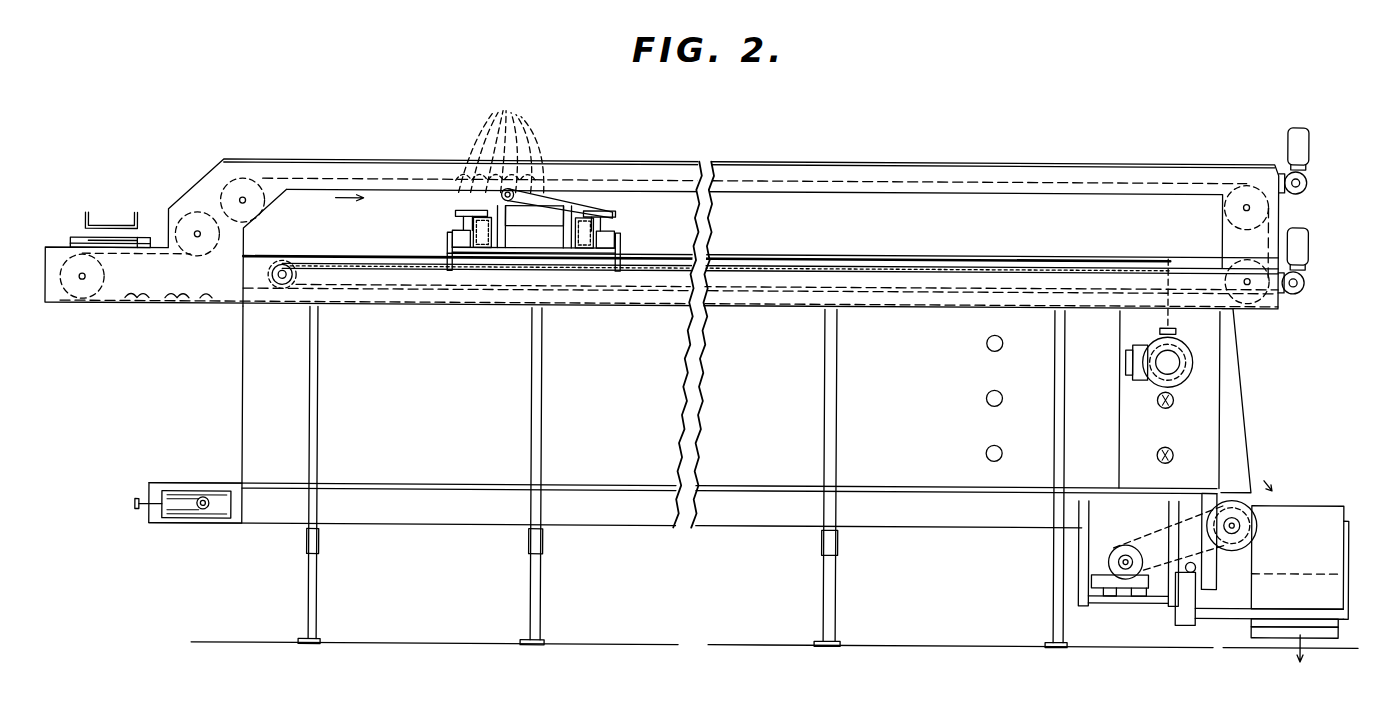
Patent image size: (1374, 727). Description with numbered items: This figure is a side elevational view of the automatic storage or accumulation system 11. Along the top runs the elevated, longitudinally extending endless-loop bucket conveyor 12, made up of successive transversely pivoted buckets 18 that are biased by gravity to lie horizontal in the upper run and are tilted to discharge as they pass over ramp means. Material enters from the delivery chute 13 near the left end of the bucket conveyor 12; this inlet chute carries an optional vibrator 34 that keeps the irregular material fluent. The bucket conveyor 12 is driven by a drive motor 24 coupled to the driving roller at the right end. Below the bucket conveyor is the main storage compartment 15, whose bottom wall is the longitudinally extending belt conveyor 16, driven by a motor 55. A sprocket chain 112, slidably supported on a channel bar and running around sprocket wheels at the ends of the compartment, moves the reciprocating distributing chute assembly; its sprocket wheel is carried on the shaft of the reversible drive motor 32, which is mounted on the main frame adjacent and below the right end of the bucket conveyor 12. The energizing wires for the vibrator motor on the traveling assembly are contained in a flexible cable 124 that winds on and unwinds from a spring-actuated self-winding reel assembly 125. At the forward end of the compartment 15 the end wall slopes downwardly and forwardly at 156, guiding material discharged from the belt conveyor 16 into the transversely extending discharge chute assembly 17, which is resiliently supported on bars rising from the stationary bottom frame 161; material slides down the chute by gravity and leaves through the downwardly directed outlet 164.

The automatic storage or accumulation system 11 is at (233, 125).
The bucket conveyor 12 is at (1031, 158).
The delivery chute 13 is at (82, 220).
The vibrator 34 is at (152, 237).
The buckets 18 is at (534, 179).
The sprocket chain 112 is at (378, 302).
The main storage compartment 15 is at (740, 379).
The belt conveyor 16 is at (727, 527).
The drive motor 24 is at (1288, 142).
The drive motor 32 is at (1300, 240).
The flexible cable 124 is at (1176, 325).
The self-winding reel assembly 125 is at (1184, 378).
The forward end wall 156 is at (1247, 416).
The discharge chute assembly 17 is at (1337, 498).
The motor 55 is at (1128, 540).
The stationary bottom frame 161 is at (1215, 622).
The outlet 164 is at (1275, 638).